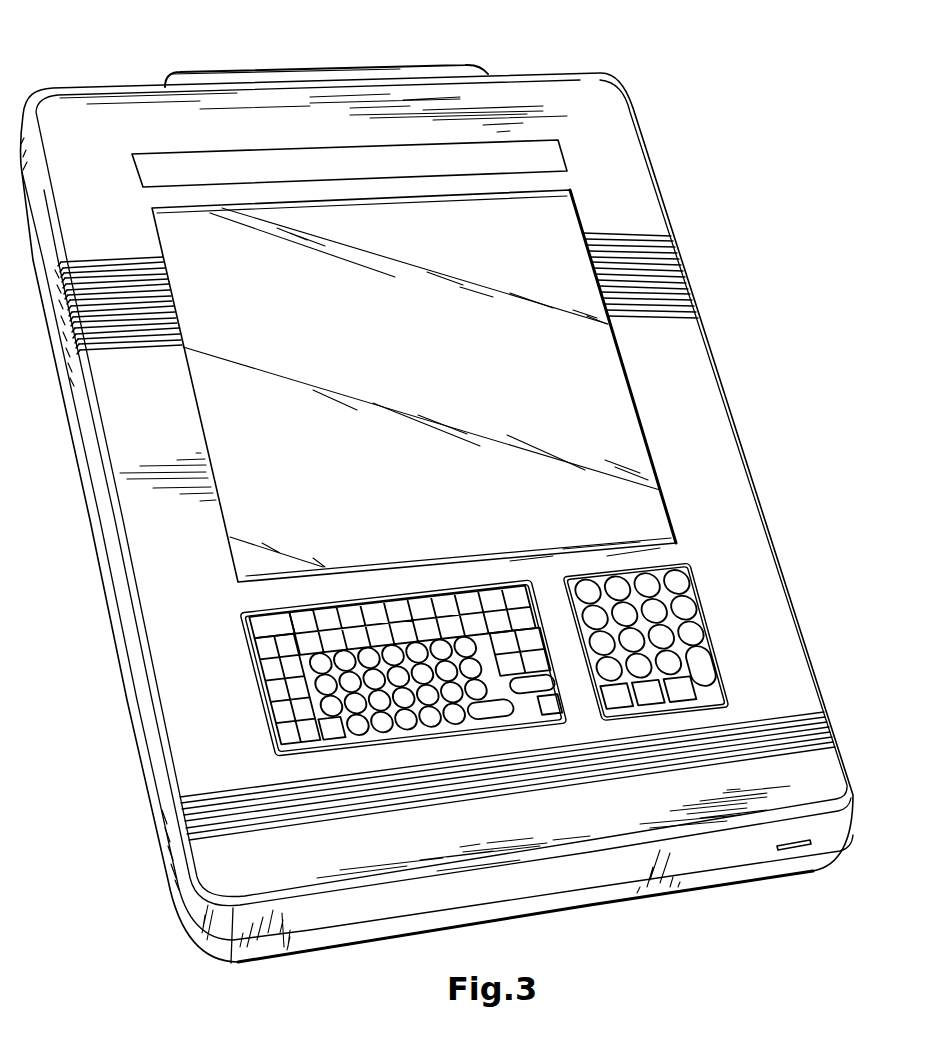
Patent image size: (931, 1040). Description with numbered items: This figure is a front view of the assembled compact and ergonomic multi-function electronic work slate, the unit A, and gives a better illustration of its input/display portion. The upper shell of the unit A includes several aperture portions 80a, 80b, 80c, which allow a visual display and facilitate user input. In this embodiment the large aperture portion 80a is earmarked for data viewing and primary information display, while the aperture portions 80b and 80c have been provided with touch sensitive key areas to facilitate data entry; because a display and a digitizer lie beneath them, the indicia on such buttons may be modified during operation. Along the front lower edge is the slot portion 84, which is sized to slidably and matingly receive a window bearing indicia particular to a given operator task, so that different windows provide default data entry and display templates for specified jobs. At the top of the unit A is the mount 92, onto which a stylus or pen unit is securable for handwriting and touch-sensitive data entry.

The unit A is at (603, 60).
The mount 92 is at (425, 65).
The aperture portion 80a is at (590, 435).
The aperture portion 80b is at (287, 692).
The aperture portion 80c is at (678, 610).
The slot portion 84 is at (800, 846).